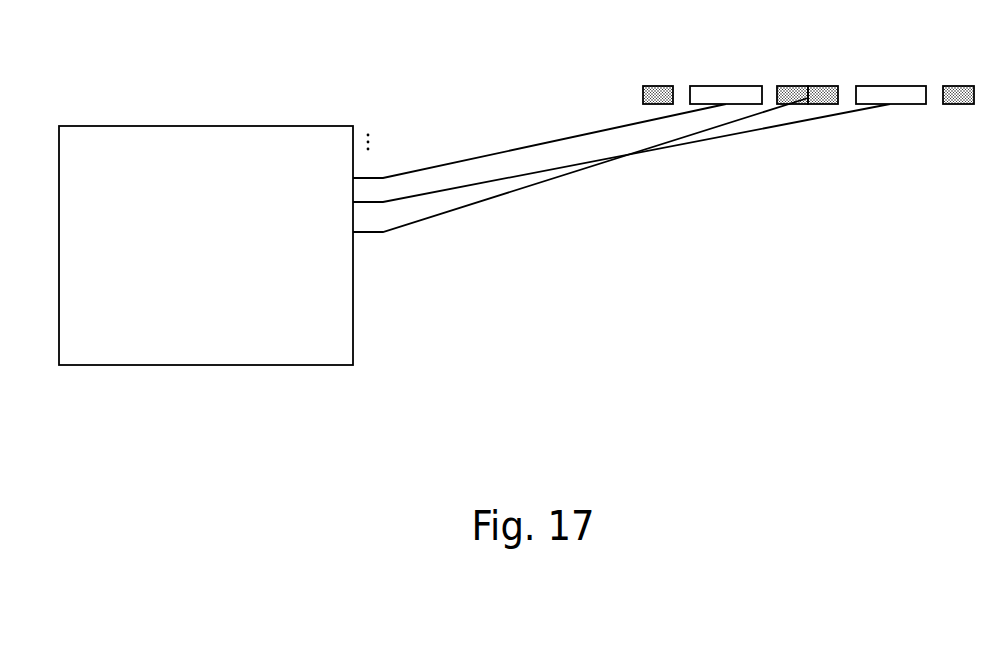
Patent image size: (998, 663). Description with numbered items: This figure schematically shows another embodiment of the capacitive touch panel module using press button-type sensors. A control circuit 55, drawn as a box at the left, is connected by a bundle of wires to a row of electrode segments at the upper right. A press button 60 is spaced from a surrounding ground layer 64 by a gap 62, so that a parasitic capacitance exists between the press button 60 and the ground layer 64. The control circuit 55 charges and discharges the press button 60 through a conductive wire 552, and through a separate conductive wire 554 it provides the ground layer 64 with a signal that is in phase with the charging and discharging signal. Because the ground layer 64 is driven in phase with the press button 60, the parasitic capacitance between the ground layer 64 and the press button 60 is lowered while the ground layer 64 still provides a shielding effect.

The control circuit 55 is at (203, 126).
The conductive wire 552 is at (517, 150).
The conductive wire 554 is at (493, 197).
The press button 60 is at (727, 86).
The gap 62 is at (681, 80).
The ground layer 64 is at (813, 86).